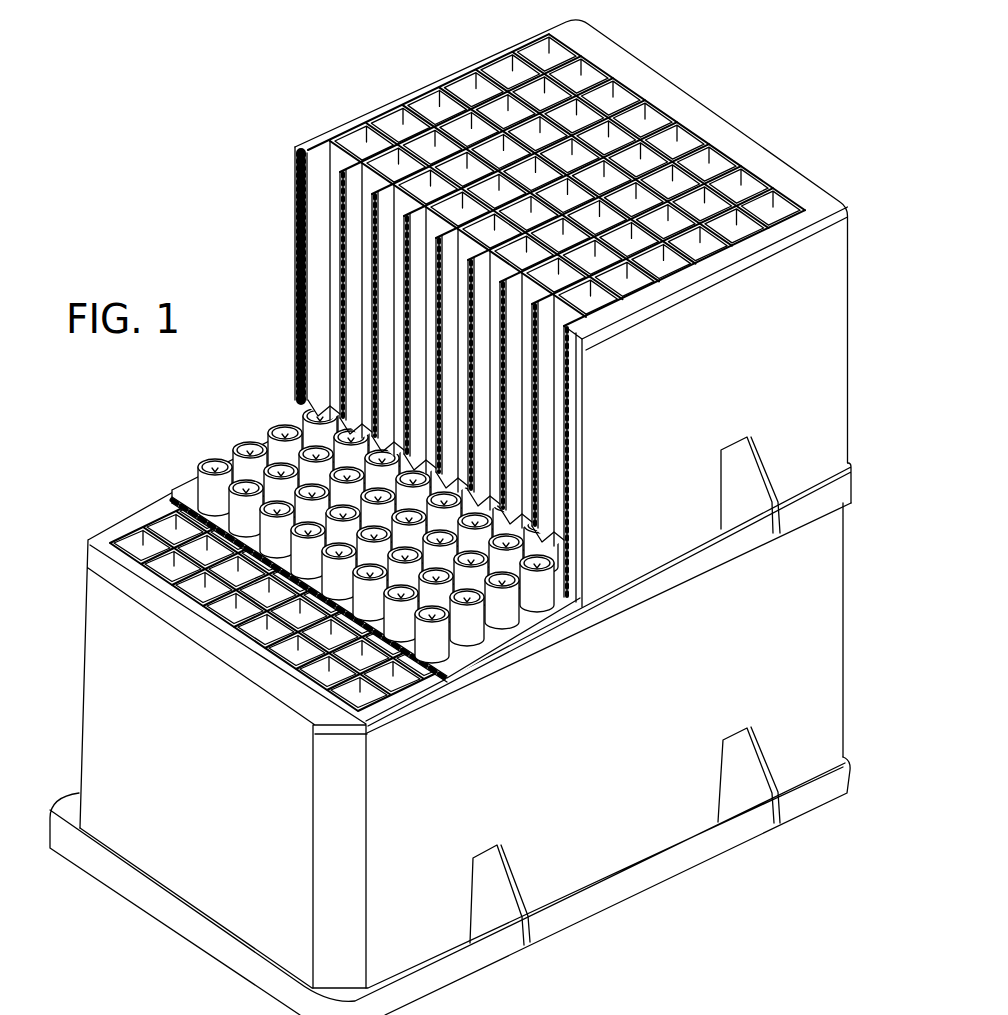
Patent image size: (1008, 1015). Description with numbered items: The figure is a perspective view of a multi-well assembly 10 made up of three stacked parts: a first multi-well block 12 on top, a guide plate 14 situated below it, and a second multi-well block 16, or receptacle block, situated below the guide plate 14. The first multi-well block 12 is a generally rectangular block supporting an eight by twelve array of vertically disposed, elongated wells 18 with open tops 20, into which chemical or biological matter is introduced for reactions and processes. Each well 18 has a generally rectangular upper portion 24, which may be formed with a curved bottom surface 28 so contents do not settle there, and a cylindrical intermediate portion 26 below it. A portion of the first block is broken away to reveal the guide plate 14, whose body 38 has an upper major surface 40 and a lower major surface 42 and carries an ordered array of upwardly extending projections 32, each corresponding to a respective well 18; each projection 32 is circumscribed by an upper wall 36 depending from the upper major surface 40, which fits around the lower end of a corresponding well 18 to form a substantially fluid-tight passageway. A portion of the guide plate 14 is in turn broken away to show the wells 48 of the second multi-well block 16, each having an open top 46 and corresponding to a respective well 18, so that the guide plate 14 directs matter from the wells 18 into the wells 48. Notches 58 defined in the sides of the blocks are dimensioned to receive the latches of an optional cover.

The multi-well assembly 10 is at (812, 148).
The first multi-well block 12 is at (594, 313).
The guide plate 14 is at (360, 547).
The second multi-well block 16 is at (849, 578).
The wells 18 is at (776, 211).
The open tops 20 is at (722, 160).
The upper portion 24 is at (553, 377).
The cylindrical intermediate portion 26 is at (551, 541).
The curved bottom surface 28 is at (544, 524).
The projections 32 is at (249, 453).
The upper wall 36 is at (396, 550).
The body 38 is at (495, 655).
The upper major surface 40 is at (517, 637).
The lower major surface 42 is at (548, 643).
The open top 46 is at (448, 684).
The wells 48 is at (162, 528).
The notch 58 is at (746, 472).